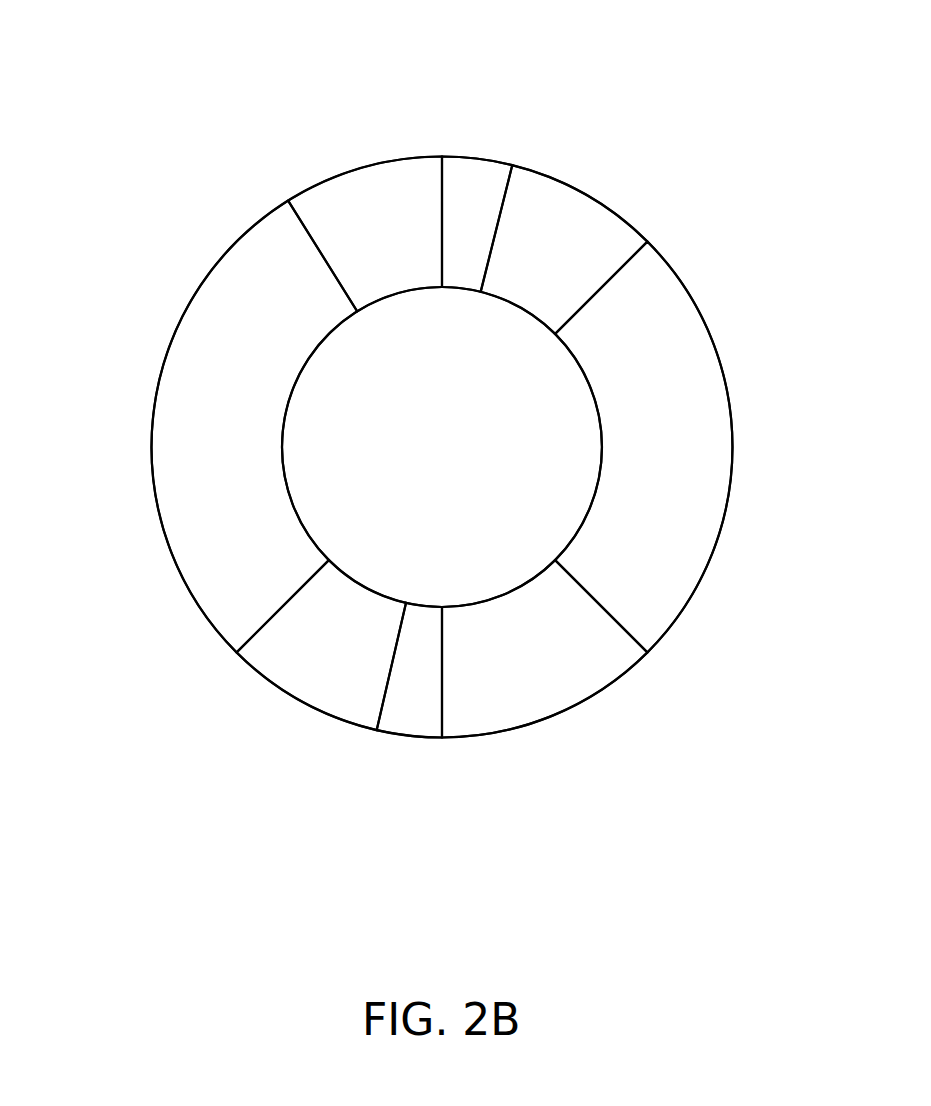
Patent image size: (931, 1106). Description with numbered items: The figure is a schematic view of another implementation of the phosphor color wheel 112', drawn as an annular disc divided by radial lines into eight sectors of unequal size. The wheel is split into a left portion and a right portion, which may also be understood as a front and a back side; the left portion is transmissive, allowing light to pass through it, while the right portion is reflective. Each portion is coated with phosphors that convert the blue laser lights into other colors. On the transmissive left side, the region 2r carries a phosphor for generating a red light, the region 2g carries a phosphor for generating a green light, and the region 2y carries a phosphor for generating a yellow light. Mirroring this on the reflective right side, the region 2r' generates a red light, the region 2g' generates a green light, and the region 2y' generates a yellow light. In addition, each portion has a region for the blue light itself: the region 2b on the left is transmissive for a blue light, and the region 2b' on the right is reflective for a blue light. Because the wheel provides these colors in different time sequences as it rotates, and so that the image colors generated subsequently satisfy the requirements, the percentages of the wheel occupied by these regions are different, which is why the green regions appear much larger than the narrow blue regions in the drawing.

The phosphor color wheel 112' is at (442, 373).
The red-light phosphor region 2r is at (365, 181).
The blue-light reflective region 2b' is at (482, 177).
The yellow-light phosphor region 2y' is at (568, 214).
The green-light phosphor region 2g' is at (686, 447).
The red-light phosphor region 2r' is at (544, 692).
The blue-light transmissive region 2b is at (409, 710).
The yellow-light phosphor region 2y is at (315, 663).
The green-light phosphor region 2g is at (202, 427).